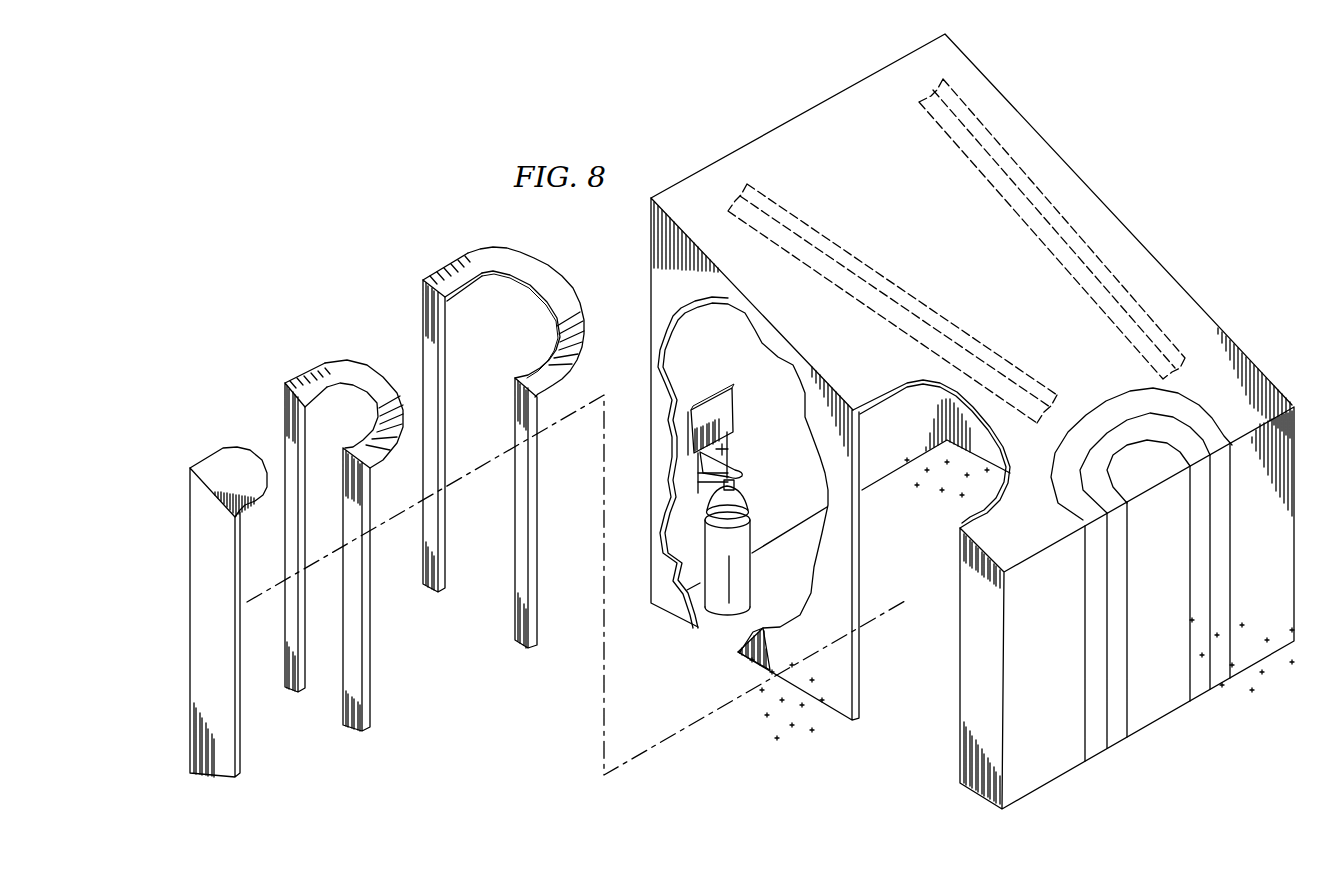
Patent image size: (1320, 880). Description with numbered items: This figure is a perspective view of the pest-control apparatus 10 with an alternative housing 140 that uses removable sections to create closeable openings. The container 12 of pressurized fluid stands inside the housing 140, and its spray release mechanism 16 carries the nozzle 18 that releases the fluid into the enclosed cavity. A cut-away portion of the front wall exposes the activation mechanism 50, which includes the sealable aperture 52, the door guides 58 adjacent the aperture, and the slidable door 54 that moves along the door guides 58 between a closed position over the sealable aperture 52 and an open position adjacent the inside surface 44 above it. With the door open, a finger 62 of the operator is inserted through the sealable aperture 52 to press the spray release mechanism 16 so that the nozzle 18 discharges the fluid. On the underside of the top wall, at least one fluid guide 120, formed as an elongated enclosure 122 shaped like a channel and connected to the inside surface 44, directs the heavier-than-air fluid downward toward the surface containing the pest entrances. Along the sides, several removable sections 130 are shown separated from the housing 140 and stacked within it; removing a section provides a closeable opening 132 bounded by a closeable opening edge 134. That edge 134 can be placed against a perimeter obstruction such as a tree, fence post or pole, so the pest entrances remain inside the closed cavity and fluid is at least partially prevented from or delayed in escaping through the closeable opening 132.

The apparatus 10 is at (377, 207).
The container 12 is at (762, 571).
The spray release mechanism 16 is at (751, 504).
The nozzle 18 is at (729, 517).
The inside surface 44 is at (882, 470).
The activation mechanism 50 is at (707, 378).
The sealable aperture 52 is at (729, 452).
The slidable door 54 is at (728, 406).
The door guides 58 is at (731, 437).
The finger 62 is at (744, 476).
The fluid guide 120 is at (872, 318).
The elongated enclosure 122 is at (833, 274).
The removable section 130 is at (213, 450).
The closeable opening 132 is at (320, 692).
The closeable opening edge 134 is at (338, 390).
The housing 140 is at (1142, 254).